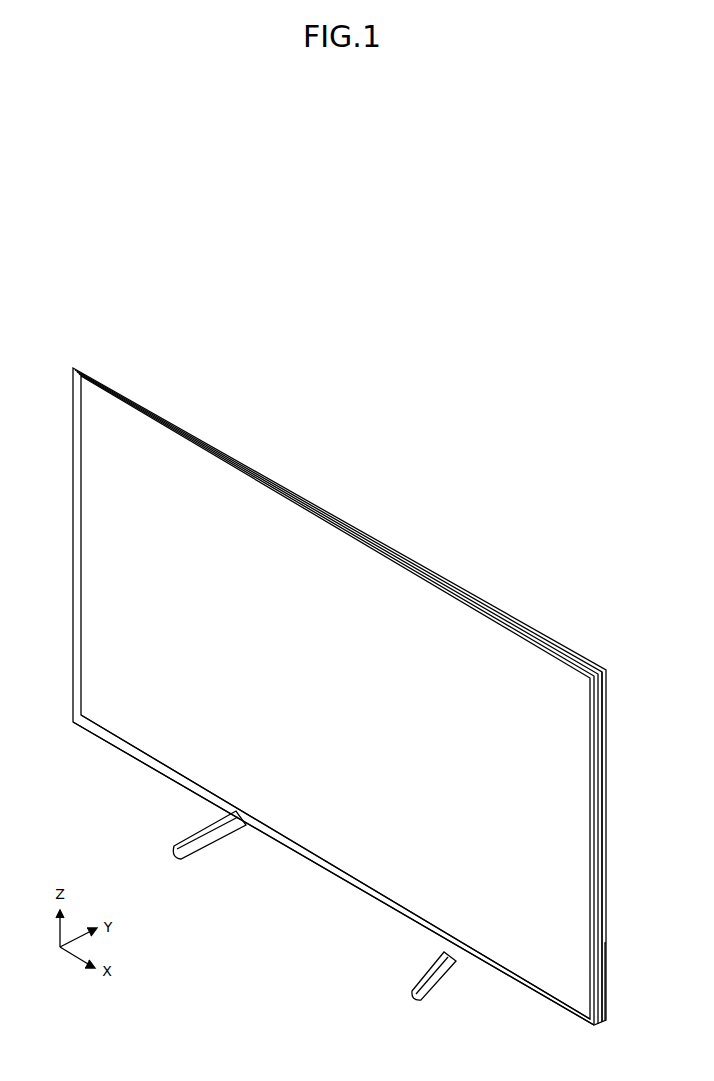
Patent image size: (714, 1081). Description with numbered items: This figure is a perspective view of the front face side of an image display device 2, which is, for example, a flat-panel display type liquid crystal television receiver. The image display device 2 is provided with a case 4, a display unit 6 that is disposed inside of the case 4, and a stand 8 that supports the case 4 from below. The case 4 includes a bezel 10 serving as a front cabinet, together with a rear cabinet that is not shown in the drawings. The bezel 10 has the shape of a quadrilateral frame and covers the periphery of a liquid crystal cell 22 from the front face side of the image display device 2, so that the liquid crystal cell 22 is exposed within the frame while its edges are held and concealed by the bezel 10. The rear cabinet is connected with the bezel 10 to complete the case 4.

The image display device 2 is at (538, 516).
The case 4 is at (607, 736).
The display unit 6 is at (116, 586).
The stand 8 is at (452, 964).
The bezel 10 is at (594, 782).
The liquid crystal cell 22 is at (368, 826).